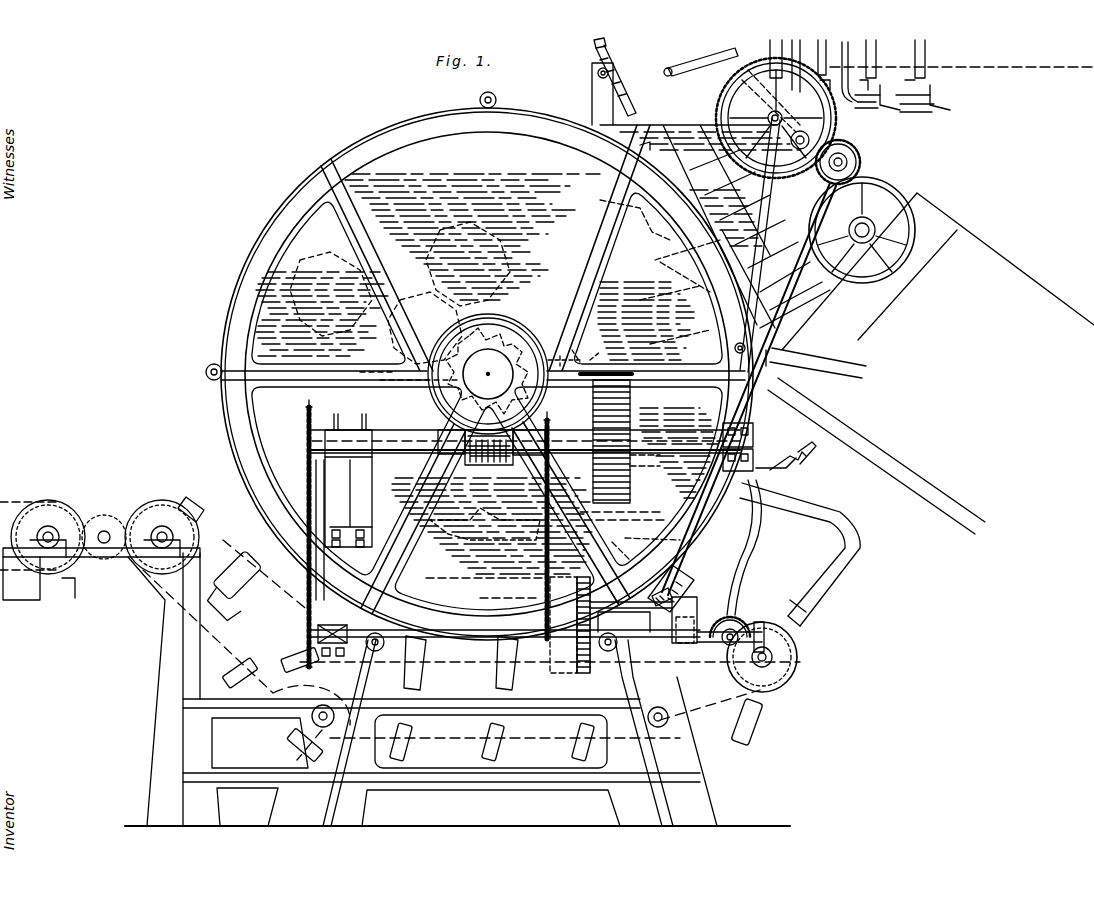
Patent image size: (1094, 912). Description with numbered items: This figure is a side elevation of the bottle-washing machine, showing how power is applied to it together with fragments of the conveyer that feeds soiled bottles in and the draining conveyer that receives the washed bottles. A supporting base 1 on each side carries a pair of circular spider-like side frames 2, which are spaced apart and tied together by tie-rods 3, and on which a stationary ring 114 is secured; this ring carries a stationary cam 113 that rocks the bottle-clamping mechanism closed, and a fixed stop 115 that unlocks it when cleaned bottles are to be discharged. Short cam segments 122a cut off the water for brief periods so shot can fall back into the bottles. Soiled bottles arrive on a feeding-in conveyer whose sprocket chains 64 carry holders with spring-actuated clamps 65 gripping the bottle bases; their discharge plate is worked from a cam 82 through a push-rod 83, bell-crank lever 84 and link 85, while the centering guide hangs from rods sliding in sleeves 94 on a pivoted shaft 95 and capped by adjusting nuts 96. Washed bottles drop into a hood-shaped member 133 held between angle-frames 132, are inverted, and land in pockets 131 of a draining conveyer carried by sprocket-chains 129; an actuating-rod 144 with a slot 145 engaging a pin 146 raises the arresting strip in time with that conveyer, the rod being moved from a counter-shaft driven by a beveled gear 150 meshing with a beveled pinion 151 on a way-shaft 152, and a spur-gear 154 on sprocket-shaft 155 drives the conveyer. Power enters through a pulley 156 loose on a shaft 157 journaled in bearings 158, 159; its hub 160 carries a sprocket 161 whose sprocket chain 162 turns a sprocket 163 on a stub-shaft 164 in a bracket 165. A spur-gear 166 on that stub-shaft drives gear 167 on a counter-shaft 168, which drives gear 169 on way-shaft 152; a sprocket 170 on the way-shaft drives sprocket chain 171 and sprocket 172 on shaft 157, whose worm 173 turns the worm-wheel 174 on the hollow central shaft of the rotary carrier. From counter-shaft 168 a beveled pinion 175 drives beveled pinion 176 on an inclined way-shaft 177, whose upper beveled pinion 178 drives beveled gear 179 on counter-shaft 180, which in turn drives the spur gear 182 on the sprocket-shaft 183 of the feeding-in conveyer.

The supporting base 1 is at (688, 758).
The side frame 2 is at (224, 286).
The tie-rod 3 is at (500, 104).
The sprocket chain 64 is at (848, 72).
The spring-actuated clamp 65 is at (715, 62).
The cam 82 is at (488, 371).
The push-rod 83 is at (574, 354).
The bell-crank lever 84 is at (734, 344).
The link 85 is at (728, 310).
The sleeve 94 is at (628, 110).
The pivoted shaft 95 is at (612, 74).
The adjusting nut 96 is at (606, 44).
The stationary cam 113 is at (635, 214).
The stationary ring 114 is at (675, 315).
The fixed stop 115 is at (754, 428).
The short cam segment 122a is at (410, 214).
The sprocket-chain 129 is at (282, 592).
The pocket 131 is at (505, 718).
The angle-frame 132 is at (820, 598).
The hood-shaped member 133 is at (862, 540).
The actuating-rod 144 is at (762, 522).
The slot 145 is at (808, 452).
The pin 146 is at (800, 470).
The beveled gear 150 is at (728, 616).
The beveled pinion 151 is at (760, 620).
The way-shaft 152 is at (735, 620).
The spur-gear 154 is at (796, 668).
The sprocket-shaft 155 is at (776, 660).
The pulley 156 is at (630, 412).
The shaft 157 is at (656, 466).
The bearing 158 is at (754, 448).
The bearing 159 is at (348, 428).
The hub 160 is at (572, 450).
The sprocket 161 is at (558, 518).
The sprocket chain 162 is at (485, 524).
The sprocket 163 is at (510, 598).
The stub-shaft 164 is at (485, 578).
The bracket 165 is at (686, 620).
The spur-gear 166 is at (622, 525).
The gear 167 is at (646, 549).
The counter-shaft 168 is at (631, 617).
The gear 169 is at (570, 625).
The sprocket 170 is at (320, 664).
The sprocket chain 171 is at (314, 474).
The sprocket 172 is at (304, 406).
The worm 173 is at (475, 465).
The worm-wheel 174 is at (488, 312).
The beveled pinion 175 is at (676, 594).
The beveled pinion 176 is at (680, 574).
The inclined way-shaft 177 is at (798, 370).
The beveled pinion 178 is at (846, 186).
The beveled gear 179 is at (862, 160).
The counter-shaft 180 is at (880, 178).
The spur gear 182 is at (836, 116).
The sprocket-shaft 183 is at (836, 128).